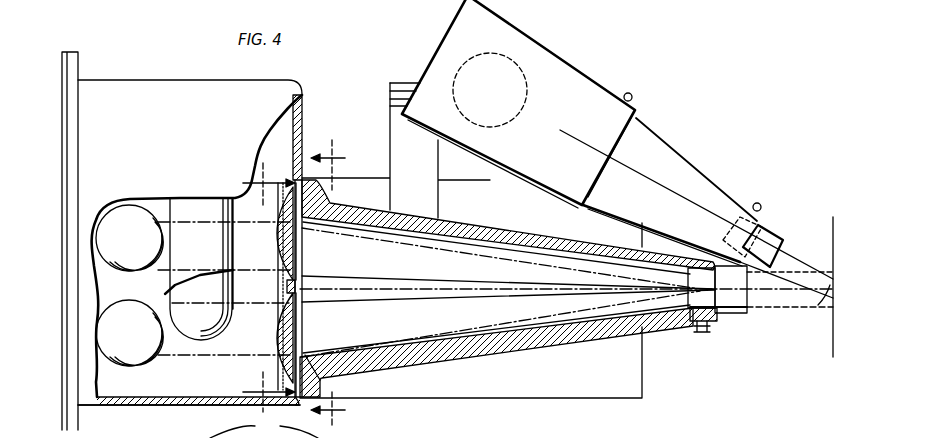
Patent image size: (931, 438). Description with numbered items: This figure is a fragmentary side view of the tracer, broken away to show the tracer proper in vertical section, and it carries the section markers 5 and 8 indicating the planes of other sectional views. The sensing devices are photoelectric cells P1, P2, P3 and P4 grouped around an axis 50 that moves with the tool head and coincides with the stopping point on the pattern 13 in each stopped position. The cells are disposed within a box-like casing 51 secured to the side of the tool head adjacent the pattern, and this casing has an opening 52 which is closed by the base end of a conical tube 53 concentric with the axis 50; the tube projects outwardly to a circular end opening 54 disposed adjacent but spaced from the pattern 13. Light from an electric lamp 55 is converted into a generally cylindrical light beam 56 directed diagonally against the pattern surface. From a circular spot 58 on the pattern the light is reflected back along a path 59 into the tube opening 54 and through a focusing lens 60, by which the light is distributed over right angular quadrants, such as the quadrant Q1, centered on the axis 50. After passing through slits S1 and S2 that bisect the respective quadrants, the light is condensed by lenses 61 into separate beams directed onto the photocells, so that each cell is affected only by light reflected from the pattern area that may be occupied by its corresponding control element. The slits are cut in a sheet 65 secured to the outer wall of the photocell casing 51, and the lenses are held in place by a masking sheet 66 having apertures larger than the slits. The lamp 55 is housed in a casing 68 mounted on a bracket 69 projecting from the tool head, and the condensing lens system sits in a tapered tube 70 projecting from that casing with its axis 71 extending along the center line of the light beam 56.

The box-like casing 51 is at (270, 92).
The photoelectric cell P1 is at (121, 211).
The photoelectric cell P2 is at (141, 360).
The photoelectric cell P3 is at (180, 297).
The photoelectric cell P4 is at (222, 258).
The section line 5- 5 is at (269, 287).
The section line 8- 8 is at (332, 288).
The bracket 69 is at (392, 132).
The electric lamp 55 is at (532, 82).
The casing 68 is at (610, 87).
The tapered tube 70 is at (690, 162).
The axis 71 is at (645, 185).
The pattern 13 is at (832, 240).
The light beam 56 is at (798, 256).
The axis 50 is at (455, 288).
The circular end opening 54 is at (700, 276).
The conical tube 53 is at (508, 348).
The focusing lens 60 is at (730, 316).
The path 59 is at (771, 309).
The circular area or spot 58 is at (826, 300).
The slit S1 is at (300, 244).
The slit S2 is at (302, 323).
The condensing lenses 61 is at (278, 240).
The sheet 65 is at (298, 289).
The opening 52 is at (306, 352).
The masking sheet 66 is at (278, 363).
The quadrant Q1 is at (264, 430).